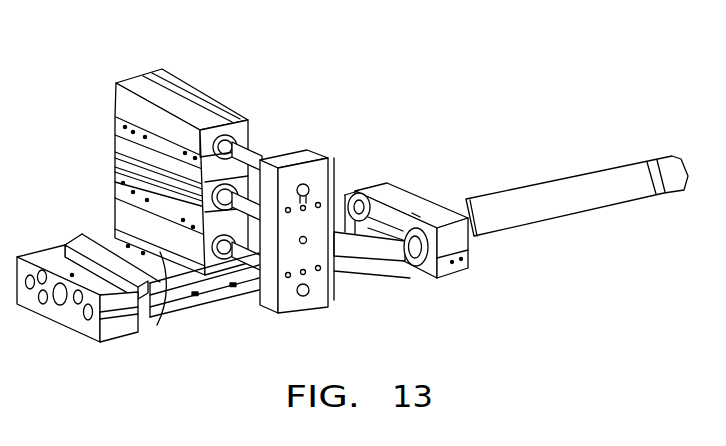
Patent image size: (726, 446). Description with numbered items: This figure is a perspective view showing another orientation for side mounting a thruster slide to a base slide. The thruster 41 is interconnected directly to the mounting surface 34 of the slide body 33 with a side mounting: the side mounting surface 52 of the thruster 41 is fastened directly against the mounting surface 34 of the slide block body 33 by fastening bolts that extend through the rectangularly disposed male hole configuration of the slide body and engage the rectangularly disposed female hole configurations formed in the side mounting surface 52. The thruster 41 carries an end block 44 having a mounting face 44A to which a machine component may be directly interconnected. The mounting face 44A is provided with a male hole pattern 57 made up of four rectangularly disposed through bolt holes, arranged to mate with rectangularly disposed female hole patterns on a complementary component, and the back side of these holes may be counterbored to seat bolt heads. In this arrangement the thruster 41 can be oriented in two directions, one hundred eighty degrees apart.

The slide body 33 is at (195, 316).
The mounting surface 34 is at (95, 239).
The thruster 41 is at (244, 84).
The end block 44 is at (320, 259).
The mounting face 44A is at (303, 297).
The side mounting surface 52 is at (157, 325).
The male hole pattern 57 is at (360, 181).